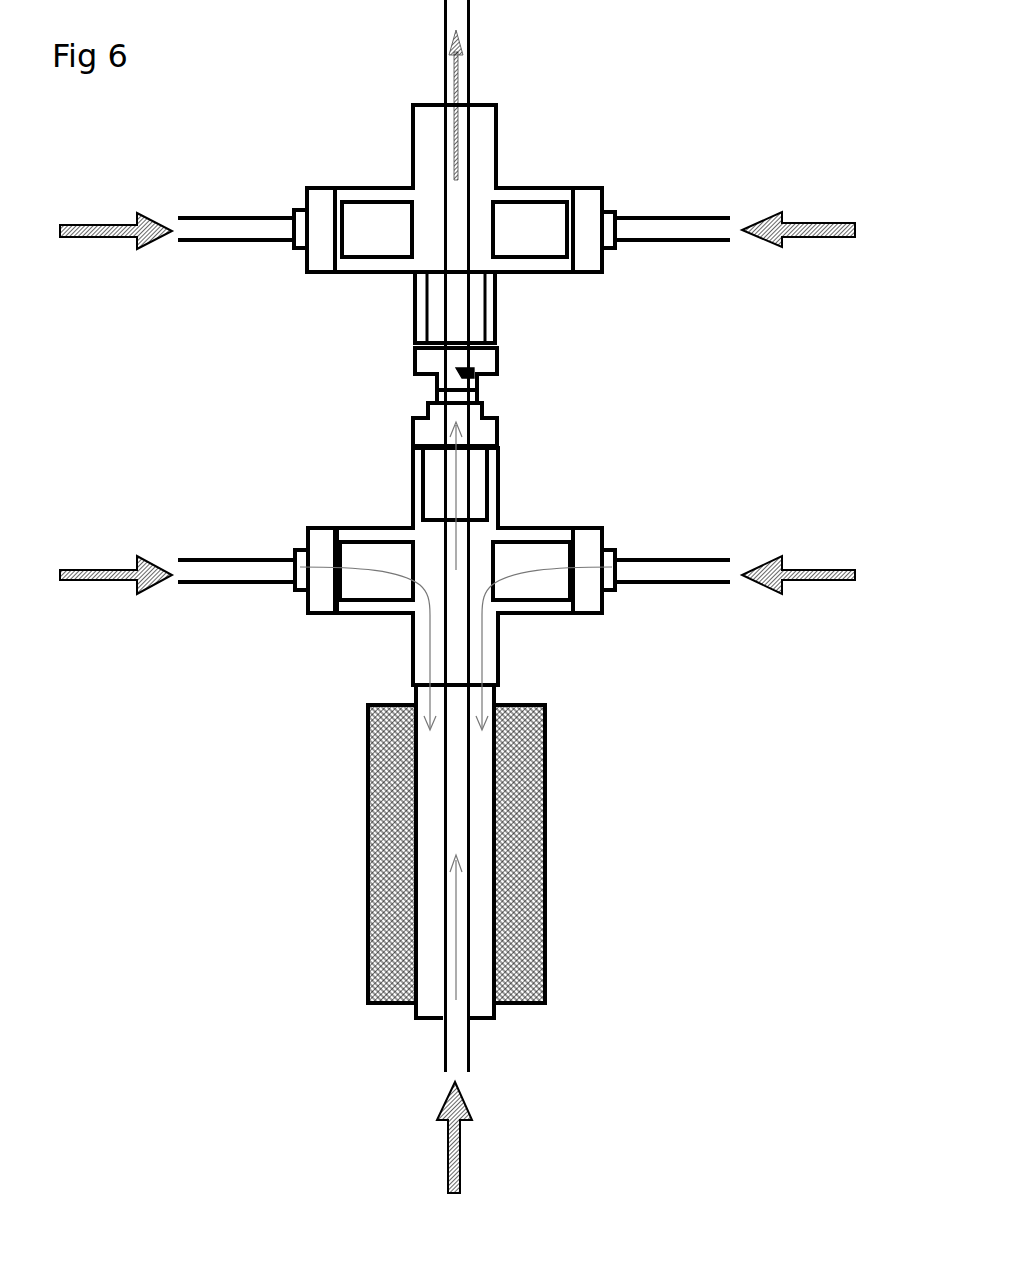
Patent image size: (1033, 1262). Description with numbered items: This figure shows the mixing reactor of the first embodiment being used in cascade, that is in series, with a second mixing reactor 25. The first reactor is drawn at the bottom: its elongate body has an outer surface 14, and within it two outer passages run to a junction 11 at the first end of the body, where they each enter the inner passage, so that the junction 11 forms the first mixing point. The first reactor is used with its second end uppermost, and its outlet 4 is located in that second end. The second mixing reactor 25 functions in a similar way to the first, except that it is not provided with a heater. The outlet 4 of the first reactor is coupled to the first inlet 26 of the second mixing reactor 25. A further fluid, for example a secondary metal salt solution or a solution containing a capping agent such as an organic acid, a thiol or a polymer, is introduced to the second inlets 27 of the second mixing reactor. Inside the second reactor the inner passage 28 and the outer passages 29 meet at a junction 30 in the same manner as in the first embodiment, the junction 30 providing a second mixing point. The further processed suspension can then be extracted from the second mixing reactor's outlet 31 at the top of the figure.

The outlet 4 is at (497, 433).
The junction 11 is at (559, 852).
The outer surface 14 is at (317, 844).
The second mixing reactor 25 is at (413, 322).
The first inlet 26 is at (422, 390).
The second inlets 27 is at (348, 273).
The inner passage 28 is at (470, 303).
The outer passages 29 is at (490, 328).
The junction 30 is at (596, 409).
The outlet 31 is at (443, 68).